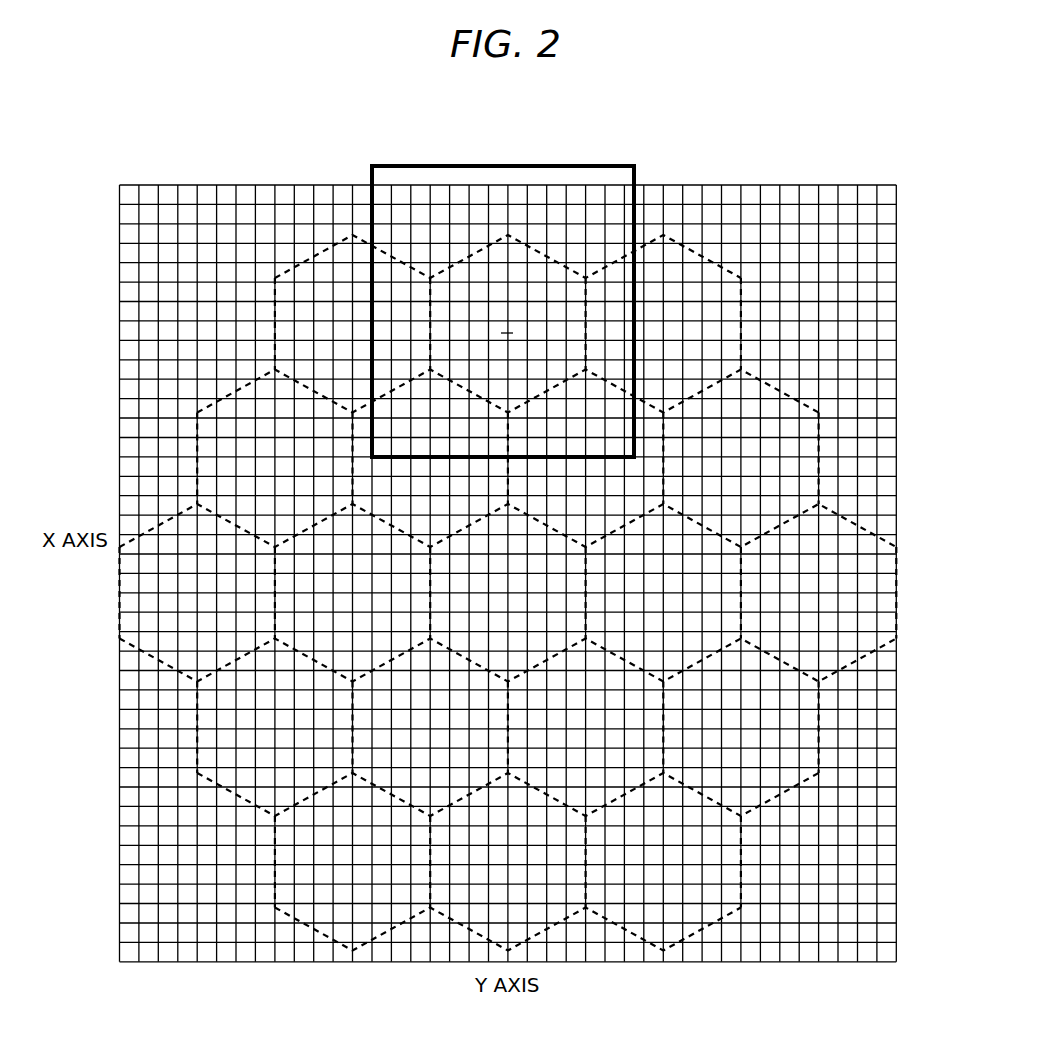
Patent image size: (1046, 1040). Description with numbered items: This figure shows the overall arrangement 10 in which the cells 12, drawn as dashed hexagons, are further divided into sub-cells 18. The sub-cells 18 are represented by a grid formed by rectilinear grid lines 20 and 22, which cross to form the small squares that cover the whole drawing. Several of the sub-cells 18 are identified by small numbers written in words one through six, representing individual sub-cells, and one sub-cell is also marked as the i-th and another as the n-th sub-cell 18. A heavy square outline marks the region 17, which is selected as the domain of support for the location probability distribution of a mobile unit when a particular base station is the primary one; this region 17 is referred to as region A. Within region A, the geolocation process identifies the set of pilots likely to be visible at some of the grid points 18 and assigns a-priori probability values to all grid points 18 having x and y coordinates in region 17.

The color image sensor / pixel array arrangement 10 is at (484, 149).
The cells 12 is at (383, 253).
The region 17 is at (638, 177).
The sub-cells 18 is at (325, 285).
The rectilinear grid lines 20 is at (120, 258).
The rectilinear grid lines 22 is at (137, 193).